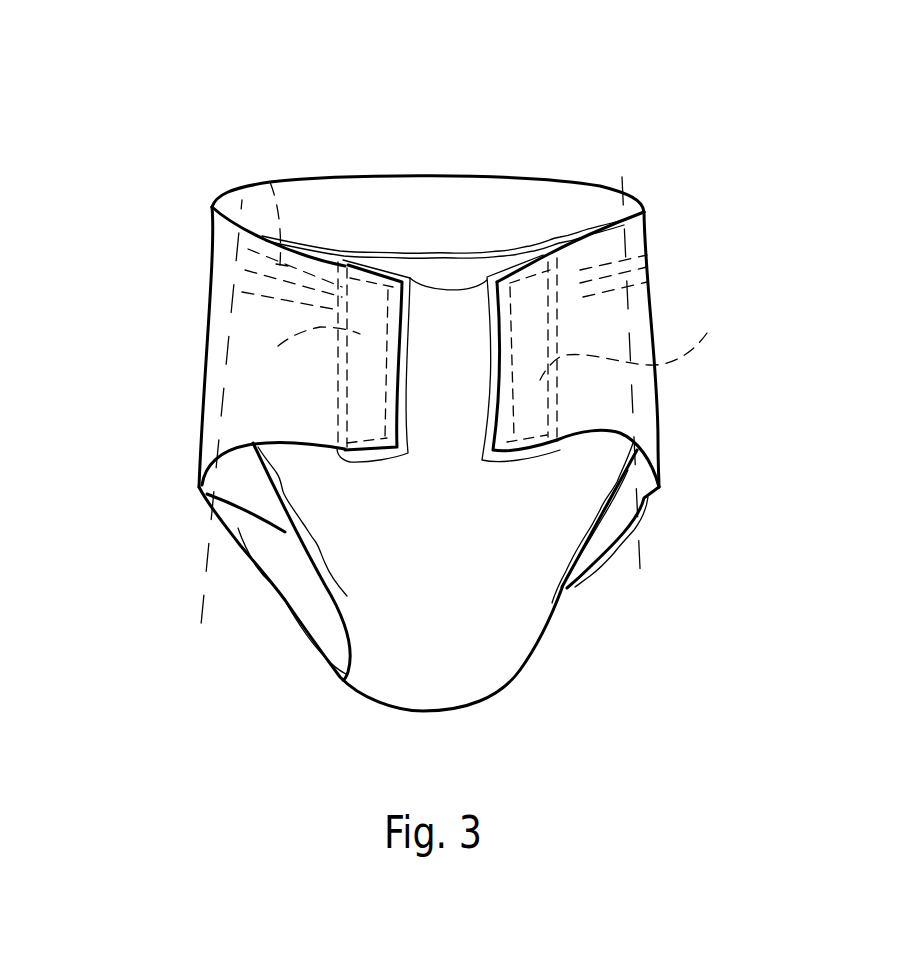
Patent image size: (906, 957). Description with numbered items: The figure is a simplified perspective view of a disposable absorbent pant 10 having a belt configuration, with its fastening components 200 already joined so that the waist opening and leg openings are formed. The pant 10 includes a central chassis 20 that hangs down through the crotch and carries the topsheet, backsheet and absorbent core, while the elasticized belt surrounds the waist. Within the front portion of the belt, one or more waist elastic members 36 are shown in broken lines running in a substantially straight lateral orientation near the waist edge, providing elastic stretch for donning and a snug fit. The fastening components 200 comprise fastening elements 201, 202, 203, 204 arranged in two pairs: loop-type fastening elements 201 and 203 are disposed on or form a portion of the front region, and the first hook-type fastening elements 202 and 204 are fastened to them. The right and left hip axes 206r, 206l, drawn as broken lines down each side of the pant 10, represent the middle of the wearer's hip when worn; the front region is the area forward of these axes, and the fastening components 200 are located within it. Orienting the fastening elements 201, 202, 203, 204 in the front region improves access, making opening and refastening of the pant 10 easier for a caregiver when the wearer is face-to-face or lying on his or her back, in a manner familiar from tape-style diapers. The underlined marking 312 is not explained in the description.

The disposable absorbent pant 10 is at (177, 175).
The central chassis 20 is at (443, 687).
The first elastic member 36 is at (270, 182).
The fastening components 200 is at (328, 398).
The loop type fastening element 201 is at (378, 266).
The first hook-type fastening element 202 is at (307, 351).
The loop type fastening element 203 is at (521, 268).
The first hook-type fastening element 204 is at (638, 342).
The hip axis 206r is at (223, 413).
The hip axis 206l is at (633, 388).
The front waist region 312 is at (471, 393).